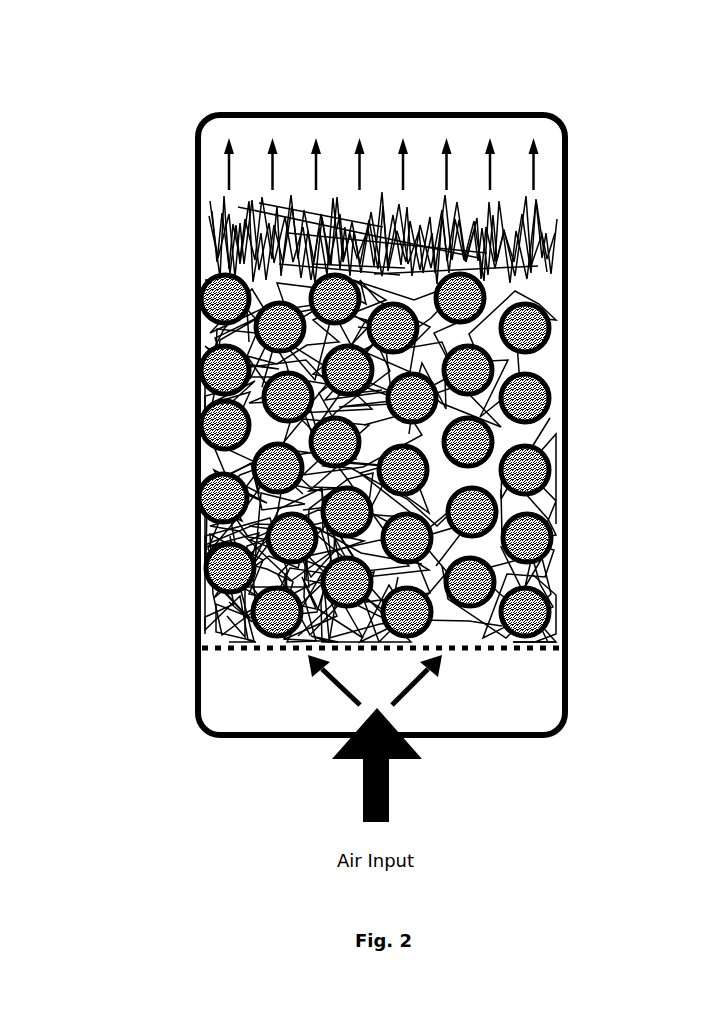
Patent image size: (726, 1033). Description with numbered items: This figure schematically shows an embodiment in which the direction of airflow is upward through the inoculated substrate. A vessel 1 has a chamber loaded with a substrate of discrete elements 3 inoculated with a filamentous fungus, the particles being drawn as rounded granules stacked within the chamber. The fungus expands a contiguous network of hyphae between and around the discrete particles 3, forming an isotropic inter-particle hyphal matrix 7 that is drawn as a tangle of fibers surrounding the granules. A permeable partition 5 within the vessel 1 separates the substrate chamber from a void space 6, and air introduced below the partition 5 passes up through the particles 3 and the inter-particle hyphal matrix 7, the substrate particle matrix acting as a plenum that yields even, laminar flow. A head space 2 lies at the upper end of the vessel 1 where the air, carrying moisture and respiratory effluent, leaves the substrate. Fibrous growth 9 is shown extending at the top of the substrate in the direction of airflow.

The vessel 1 is at (199, 127).
The head space 2 is at (509, 703).
The discrete elements 3 is at (225, 368).
The permeable partition 5 is at (538, 648).
The void space 6 is at (420, 163).
The inter-particle hyphal matrix 7 is at (308, 578).
The fibers 9 is at (287, 236).